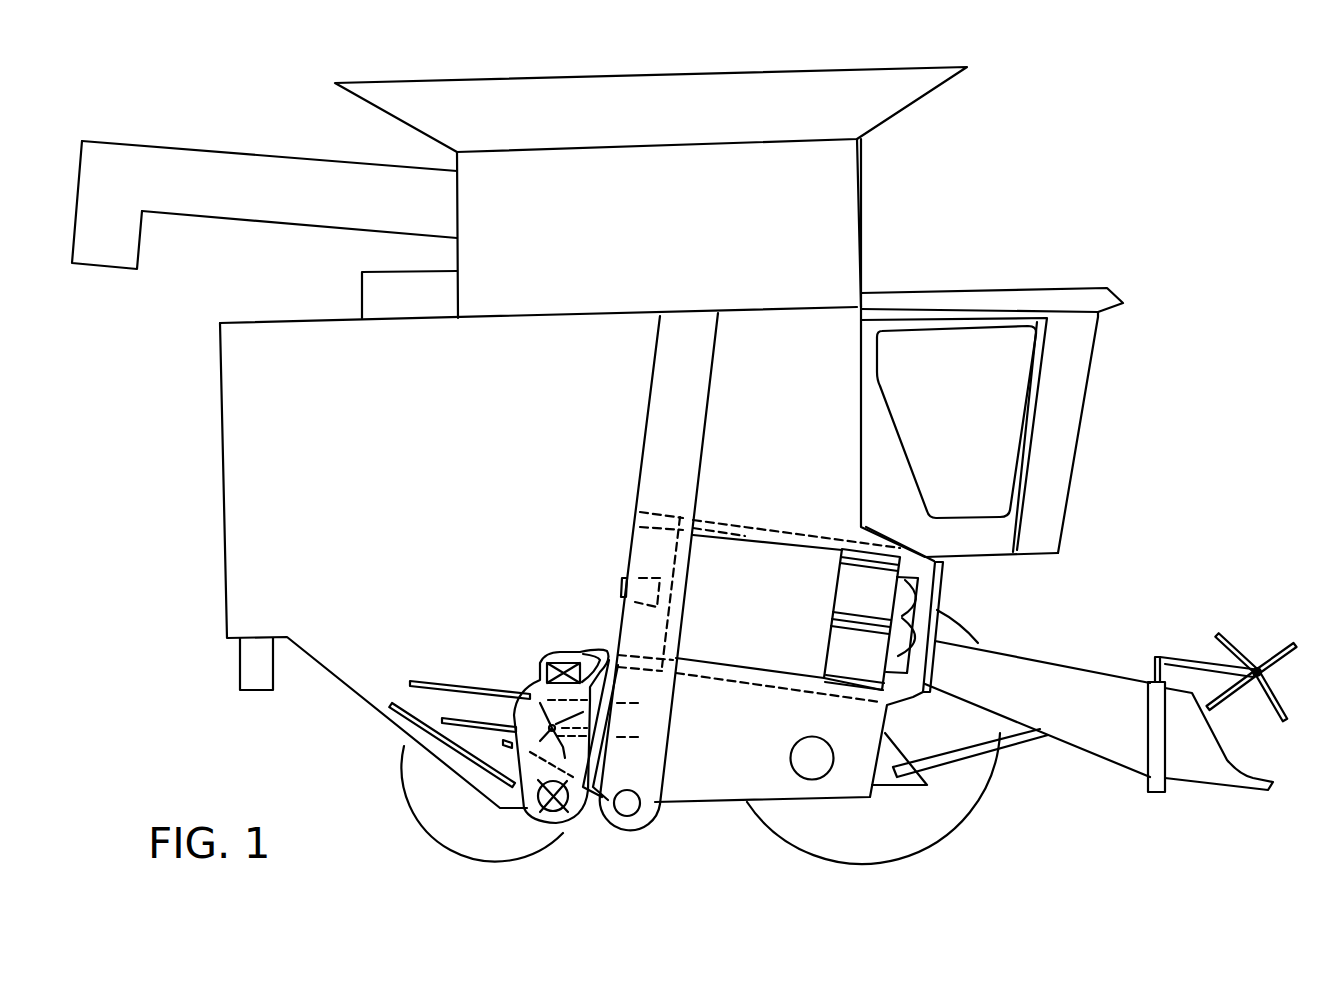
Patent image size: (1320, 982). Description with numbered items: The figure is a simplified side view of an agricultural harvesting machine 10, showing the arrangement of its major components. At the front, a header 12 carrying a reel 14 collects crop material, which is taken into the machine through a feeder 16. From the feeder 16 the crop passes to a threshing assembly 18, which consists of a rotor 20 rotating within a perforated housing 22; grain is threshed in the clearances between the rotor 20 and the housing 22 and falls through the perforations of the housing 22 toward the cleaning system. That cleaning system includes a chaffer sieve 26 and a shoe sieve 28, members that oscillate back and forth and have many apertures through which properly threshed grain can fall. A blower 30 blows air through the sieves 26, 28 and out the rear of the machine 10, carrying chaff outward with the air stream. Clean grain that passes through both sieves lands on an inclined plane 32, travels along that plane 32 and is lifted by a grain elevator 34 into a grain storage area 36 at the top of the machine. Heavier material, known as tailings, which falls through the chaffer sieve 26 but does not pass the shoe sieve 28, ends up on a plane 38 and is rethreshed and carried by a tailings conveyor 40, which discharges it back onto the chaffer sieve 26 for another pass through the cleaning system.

The agricultural harvesting machine 10 is at (1207, 417).
The header 12 is at (1190, 768).
The reel 14 is at (1263, 660).
The feeder 16 is at (1032, 675).
The threshing assembly 18 is at (762, 544).
The rotor 20 is at (887, 593).
The perforated housing 22 is at (822, 534).
The chaffer sieve 26 is at (432, 681).
The shoe sieve 28 is at (488, 718).
The blower 30 is at (835, 755).
The inclined plane 32 is at (512, 783).
The grain elevator 34 is at (672, 432).
The grain storage area 36 is at (880, 100).
The plane 38 is at (442, 755).
The tailings conveyor 40 is at (557, 823).